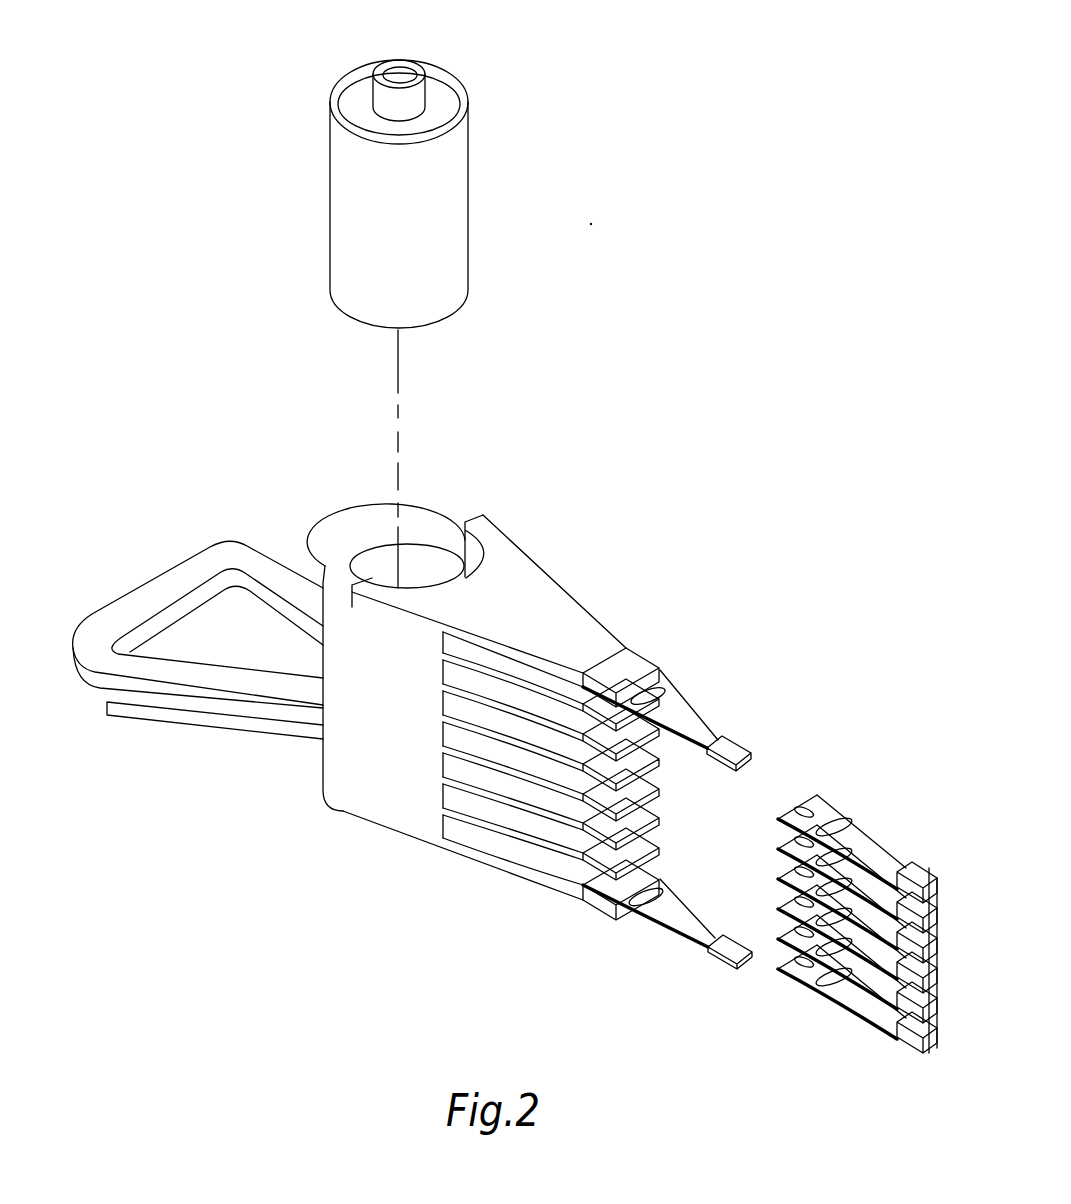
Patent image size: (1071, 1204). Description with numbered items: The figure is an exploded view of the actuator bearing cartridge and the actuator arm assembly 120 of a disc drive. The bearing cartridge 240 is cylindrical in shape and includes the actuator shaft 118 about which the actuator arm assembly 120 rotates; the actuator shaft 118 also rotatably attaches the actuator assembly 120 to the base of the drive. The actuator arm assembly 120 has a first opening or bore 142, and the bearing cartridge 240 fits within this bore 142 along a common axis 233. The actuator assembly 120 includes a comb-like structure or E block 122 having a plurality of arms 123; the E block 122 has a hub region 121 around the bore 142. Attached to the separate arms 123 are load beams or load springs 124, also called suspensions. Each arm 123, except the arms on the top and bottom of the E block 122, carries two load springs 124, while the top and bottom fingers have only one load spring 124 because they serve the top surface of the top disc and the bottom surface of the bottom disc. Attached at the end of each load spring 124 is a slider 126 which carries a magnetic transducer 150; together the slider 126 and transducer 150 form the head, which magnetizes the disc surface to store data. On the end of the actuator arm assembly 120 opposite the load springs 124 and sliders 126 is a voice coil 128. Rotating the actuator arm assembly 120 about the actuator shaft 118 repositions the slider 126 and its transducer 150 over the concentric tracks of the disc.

The actuator shaft 118 is at (401, 60).
The bearing cartridge 240 is at (468, 194).
The pivot axis 233 is at (401, 434).
The bore 142 is at (454, 532).
The arms 123 is at (557, 607).
The voice coil 128 is at (147, 580).
The actuator body hub 121 is at (343, 758).
The actuator assembly 120 is at (375, 810).
The comb-like structure 122 is at (513, 870).
The load springs 124 is at (673, 712).
The magnetic transducer 150 is at (753, 752).
The slider 126 is at (748, 768).